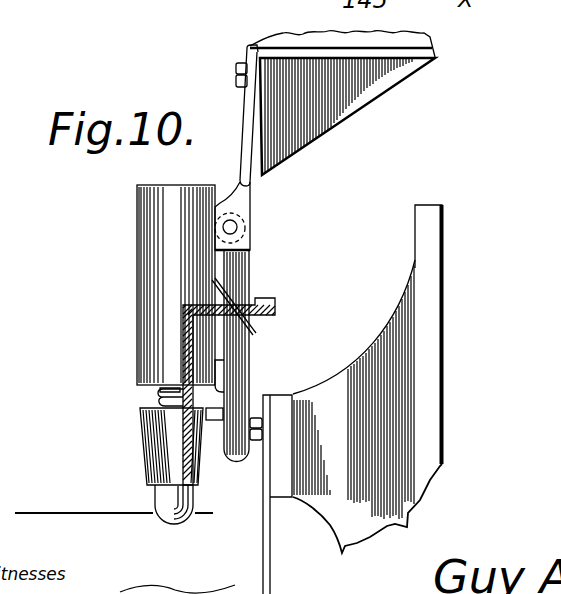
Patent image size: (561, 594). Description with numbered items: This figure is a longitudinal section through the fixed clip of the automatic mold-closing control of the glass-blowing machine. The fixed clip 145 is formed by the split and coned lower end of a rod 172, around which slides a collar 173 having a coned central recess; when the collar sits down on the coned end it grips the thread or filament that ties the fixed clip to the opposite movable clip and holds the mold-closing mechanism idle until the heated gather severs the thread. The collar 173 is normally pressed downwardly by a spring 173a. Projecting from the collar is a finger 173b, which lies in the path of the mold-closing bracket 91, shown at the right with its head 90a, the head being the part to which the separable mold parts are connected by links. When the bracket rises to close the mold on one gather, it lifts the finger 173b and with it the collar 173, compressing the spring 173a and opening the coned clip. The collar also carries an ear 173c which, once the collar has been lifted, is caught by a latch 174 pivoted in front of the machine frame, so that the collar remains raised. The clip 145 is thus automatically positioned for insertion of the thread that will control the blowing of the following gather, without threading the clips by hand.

The head 90a is at (283, 411).
The bracket 91 is at (387, 393).
The clip 145 is at (178, 508).
The rod 172 is at (173, 400).
The collar 173 is at (143, 448).
The spring 173a is at (158, 393).
The finger 173b is at (276, 299).
The ear 173c is at (223, 412).
The latch 174 is at (237, 362).